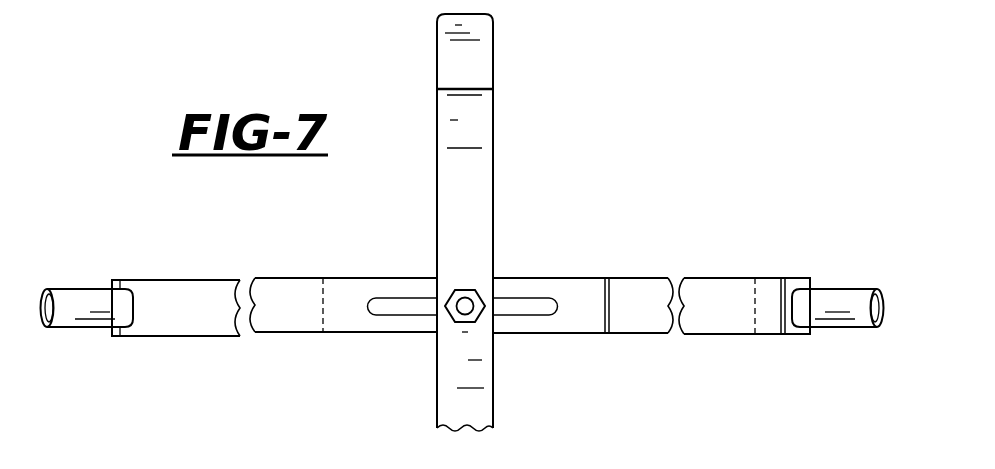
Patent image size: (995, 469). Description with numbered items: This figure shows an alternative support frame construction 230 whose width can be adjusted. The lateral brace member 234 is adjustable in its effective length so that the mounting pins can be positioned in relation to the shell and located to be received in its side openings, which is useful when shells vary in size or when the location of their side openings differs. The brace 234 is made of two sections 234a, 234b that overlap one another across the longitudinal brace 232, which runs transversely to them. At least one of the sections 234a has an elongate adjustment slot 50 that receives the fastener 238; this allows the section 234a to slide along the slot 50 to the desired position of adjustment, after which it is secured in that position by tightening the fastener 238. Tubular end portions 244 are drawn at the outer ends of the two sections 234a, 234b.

The support frame construction 230 is at (574, 201).
The longitudinal brace 232 is at (493, 155).
The lateral brace member 234 is at (584, 279).
The brace section 234a is at (343, 283).
The brace section 234b is at (736, 292).
The fastener 238 is at (450, 318).
The tube end 244 is at (73, 295).
The elongate adjustment slot 50 is at (528, 307).